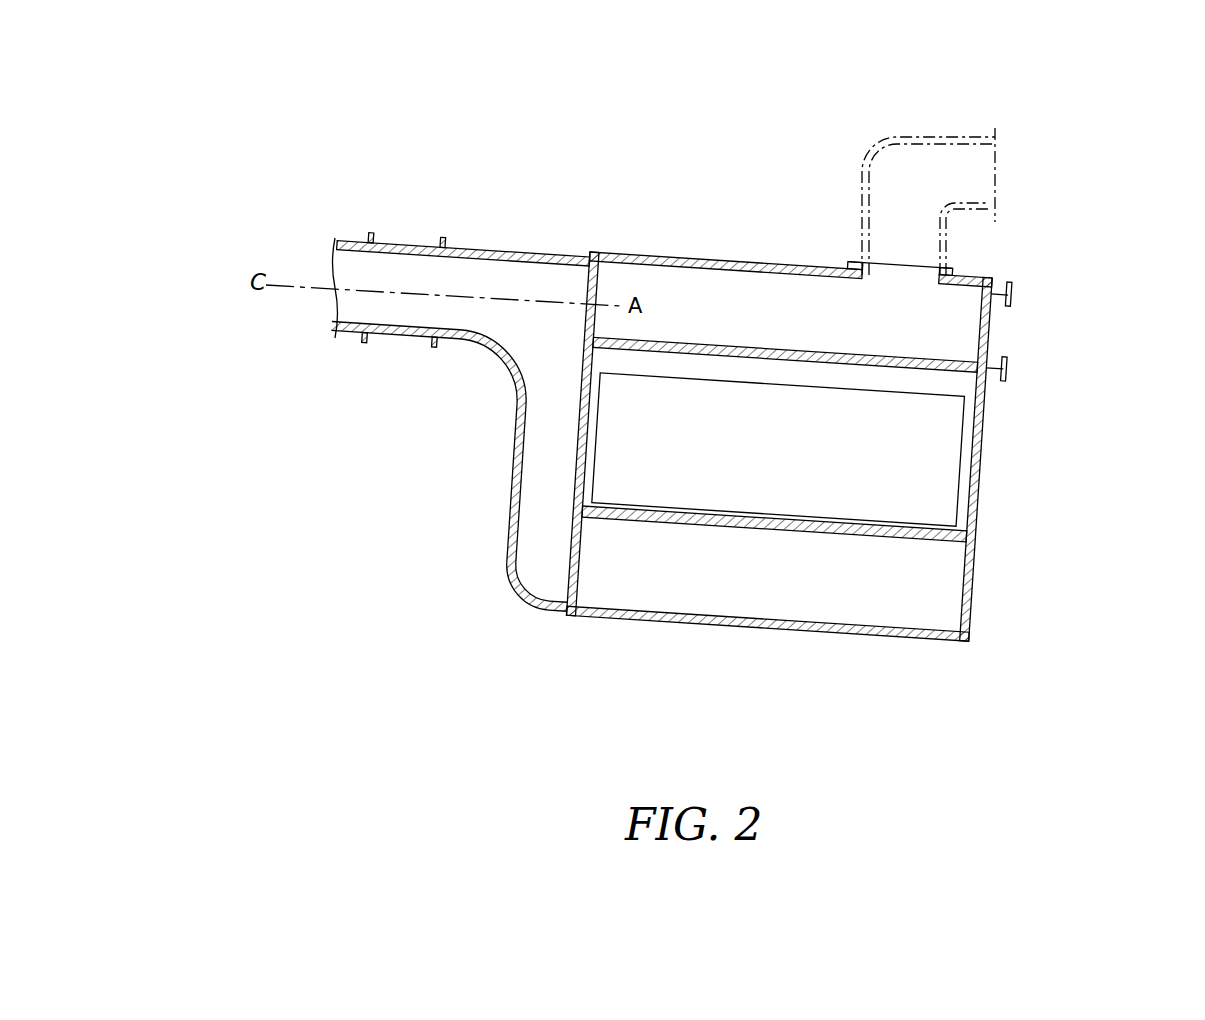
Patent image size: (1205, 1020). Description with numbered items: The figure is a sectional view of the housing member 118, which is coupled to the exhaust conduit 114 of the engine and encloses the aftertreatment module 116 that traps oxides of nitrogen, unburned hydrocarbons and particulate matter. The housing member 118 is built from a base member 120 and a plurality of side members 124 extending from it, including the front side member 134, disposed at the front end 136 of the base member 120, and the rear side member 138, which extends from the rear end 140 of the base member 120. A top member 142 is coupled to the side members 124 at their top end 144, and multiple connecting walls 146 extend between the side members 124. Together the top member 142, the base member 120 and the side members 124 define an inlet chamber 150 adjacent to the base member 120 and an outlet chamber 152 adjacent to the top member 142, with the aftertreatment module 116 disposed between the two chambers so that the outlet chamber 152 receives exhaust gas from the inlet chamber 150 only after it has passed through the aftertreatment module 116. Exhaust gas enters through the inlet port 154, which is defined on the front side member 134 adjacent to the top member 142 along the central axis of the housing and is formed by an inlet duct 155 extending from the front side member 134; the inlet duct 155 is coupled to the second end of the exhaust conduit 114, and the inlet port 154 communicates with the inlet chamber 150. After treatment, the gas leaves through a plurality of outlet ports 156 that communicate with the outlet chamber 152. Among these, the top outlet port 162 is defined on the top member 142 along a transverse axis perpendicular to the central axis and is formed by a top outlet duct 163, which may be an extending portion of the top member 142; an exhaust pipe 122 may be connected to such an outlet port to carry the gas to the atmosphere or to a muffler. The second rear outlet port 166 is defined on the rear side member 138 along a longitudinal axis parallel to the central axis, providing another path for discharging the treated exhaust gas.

The exhaust conduit 114 is at (349, 242).
The aftertreatment module 116 is at (802, 459).
The housing member 118 is at (487, 138).
The base member 120 is at (665, 630).
The exhaust pipe 122 is at (930, 130).
The side members 124 is at (1006, 477).
The front side member 134 is at (519, 463).
The front end 136 is at (542, 630).
The rear side member 138 is at (975, 540).
The rear end 140 is at (1000, 627).
The top member 142 is at (623, 250).
The top end 144 is at (575, 243).
The connecting walls 146 is at (685, 340).
The inlet chamber 150 is at (541, 572).
The outlet chamber 152 is at (764, 290).
The inlet port 154 is at (480, 278).
The inlet duct 155 is at (512, 256).
The outlet ports 156 is at (1101, 248).
The top outlet port 162 is at (921, 263).
The top outlet duct 163 is at (965, 269).
The second rear outlet port 166 is at (1014, 324).